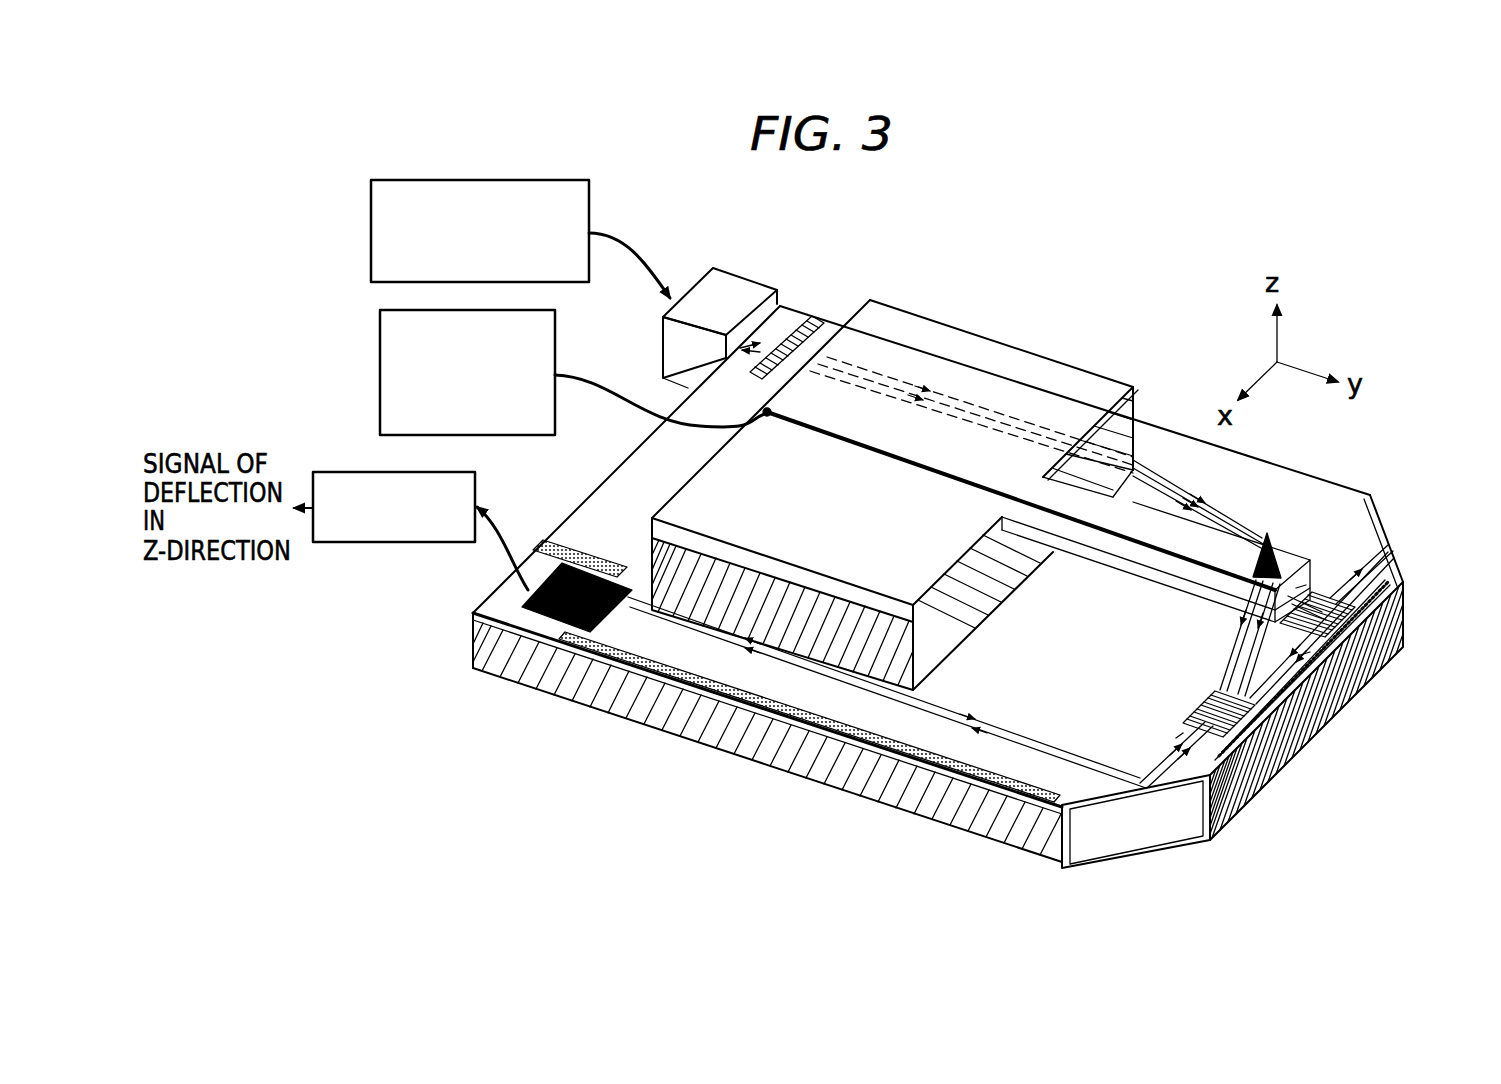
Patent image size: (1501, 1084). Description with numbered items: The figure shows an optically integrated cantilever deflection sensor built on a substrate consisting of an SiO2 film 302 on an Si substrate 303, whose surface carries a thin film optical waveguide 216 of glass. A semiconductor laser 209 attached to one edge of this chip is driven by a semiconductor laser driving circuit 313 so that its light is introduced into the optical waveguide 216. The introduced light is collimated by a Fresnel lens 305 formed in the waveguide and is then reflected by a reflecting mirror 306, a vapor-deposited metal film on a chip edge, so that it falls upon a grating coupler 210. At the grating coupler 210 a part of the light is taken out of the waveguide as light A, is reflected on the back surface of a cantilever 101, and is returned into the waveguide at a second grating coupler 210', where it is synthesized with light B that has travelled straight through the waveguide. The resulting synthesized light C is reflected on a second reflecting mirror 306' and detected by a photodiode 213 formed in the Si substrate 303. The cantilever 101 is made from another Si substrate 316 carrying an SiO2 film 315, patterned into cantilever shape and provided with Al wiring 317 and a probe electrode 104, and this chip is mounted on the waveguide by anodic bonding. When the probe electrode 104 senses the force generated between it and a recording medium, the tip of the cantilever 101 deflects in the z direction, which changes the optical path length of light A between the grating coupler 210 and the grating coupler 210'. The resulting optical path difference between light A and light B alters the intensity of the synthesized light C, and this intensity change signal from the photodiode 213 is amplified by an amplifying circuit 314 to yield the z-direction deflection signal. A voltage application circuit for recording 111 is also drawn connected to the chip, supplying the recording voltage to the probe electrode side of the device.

The semiconductor laser driving circuit 313 is at (371, 192).
The voltage application circuit for recording 111 is at (380, 338).
The amplifying circuit 314 is at (330, 472).
The semiconductor laser 209 is at (724, 293).
The Fresnel lens 305 is at (807, 327).
The Al wiring 317 is at (947, 465).
The SiO2 film 315 is at (1122, 433).
The Si substrate 316 is at (1120, 432).
The cantilever 101 is at (1220, 537).
The probe electrode 104 is at (1288, 530).
The reflecting mirror 306 is at (1337, 667).
The reflecting mirror 306' is at (1144, 837).
The grating coupler 210 is at (1336, 630).
The grating coupler 210' is at (1240, 750).
The photodiode 213 is at (517, 633).
The thin film optical waveguide 216 is at (613, 657).
The SiO2 film 302 is at (703, 700).
The Si substrate 303 is at (818, 773).
The light A is at (1316, 571).
The light B is at (1296, 670).
The synthesized light C is at (1170, 737).